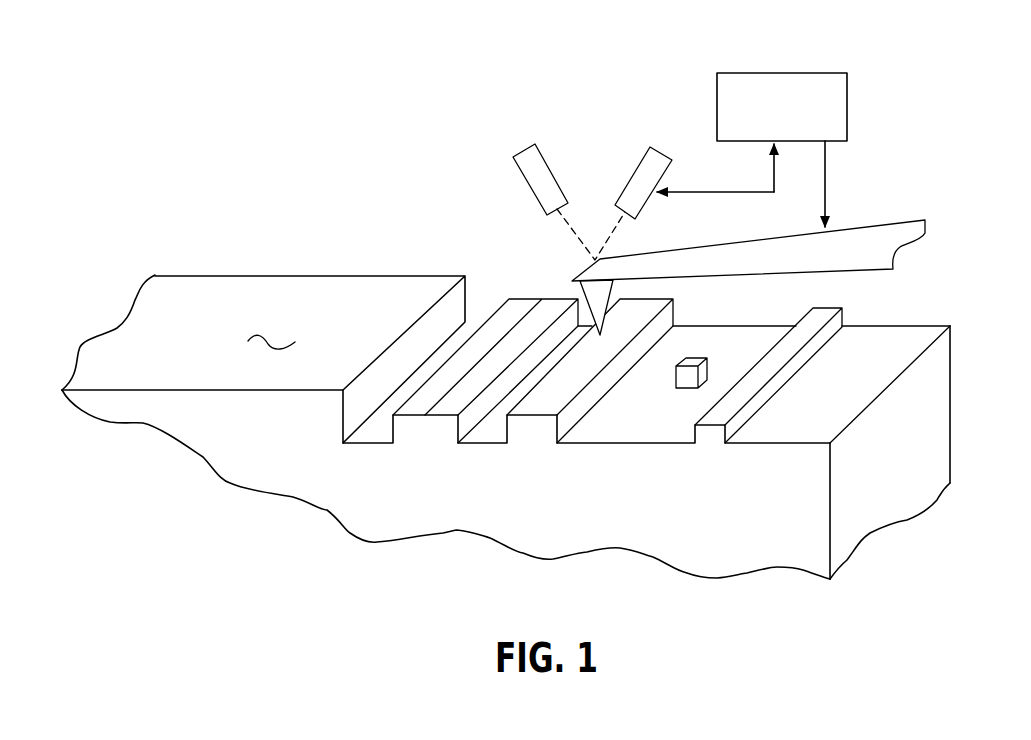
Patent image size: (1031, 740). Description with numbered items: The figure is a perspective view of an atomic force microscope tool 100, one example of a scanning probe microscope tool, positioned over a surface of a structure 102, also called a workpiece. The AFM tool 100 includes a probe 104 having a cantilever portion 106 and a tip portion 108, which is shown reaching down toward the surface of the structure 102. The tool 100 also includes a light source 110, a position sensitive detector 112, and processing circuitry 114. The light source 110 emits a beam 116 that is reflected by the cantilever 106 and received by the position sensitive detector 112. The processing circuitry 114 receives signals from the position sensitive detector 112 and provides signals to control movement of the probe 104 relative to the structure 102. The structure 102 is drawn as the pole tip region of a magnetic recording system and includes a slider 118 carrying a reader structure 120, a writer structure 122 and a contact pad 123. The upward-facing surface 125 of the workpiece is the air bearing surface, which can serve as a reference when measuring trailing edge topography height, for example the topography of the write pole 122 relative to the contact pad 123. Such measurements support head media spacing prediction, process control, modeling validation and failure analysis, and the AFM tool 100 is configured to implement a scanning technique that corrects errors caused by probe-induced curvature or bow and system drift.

The atomic force microscope tool 100 is at (622, 95).
The structure 102 is at (923, 483).
The probe 104 is at (931, 249).
The cantilever portion 106 is at (890, 235).
The tip portion 108 is at (598, 299).
The light source 110 is at (537, 160).
The position sensitive detector 112 is at (653, 160).
The processing circuitry 114 is at (827, 75).
The beam 116 is at (563, 223).
The slider 118 is at (334, 292).
The reader structure 120 is at (520, 306).
The writer structure 122 is at (678, 375).
The contact pad 123 is at (843, 325).
The upward-facing surface 125 is at (266, 348).